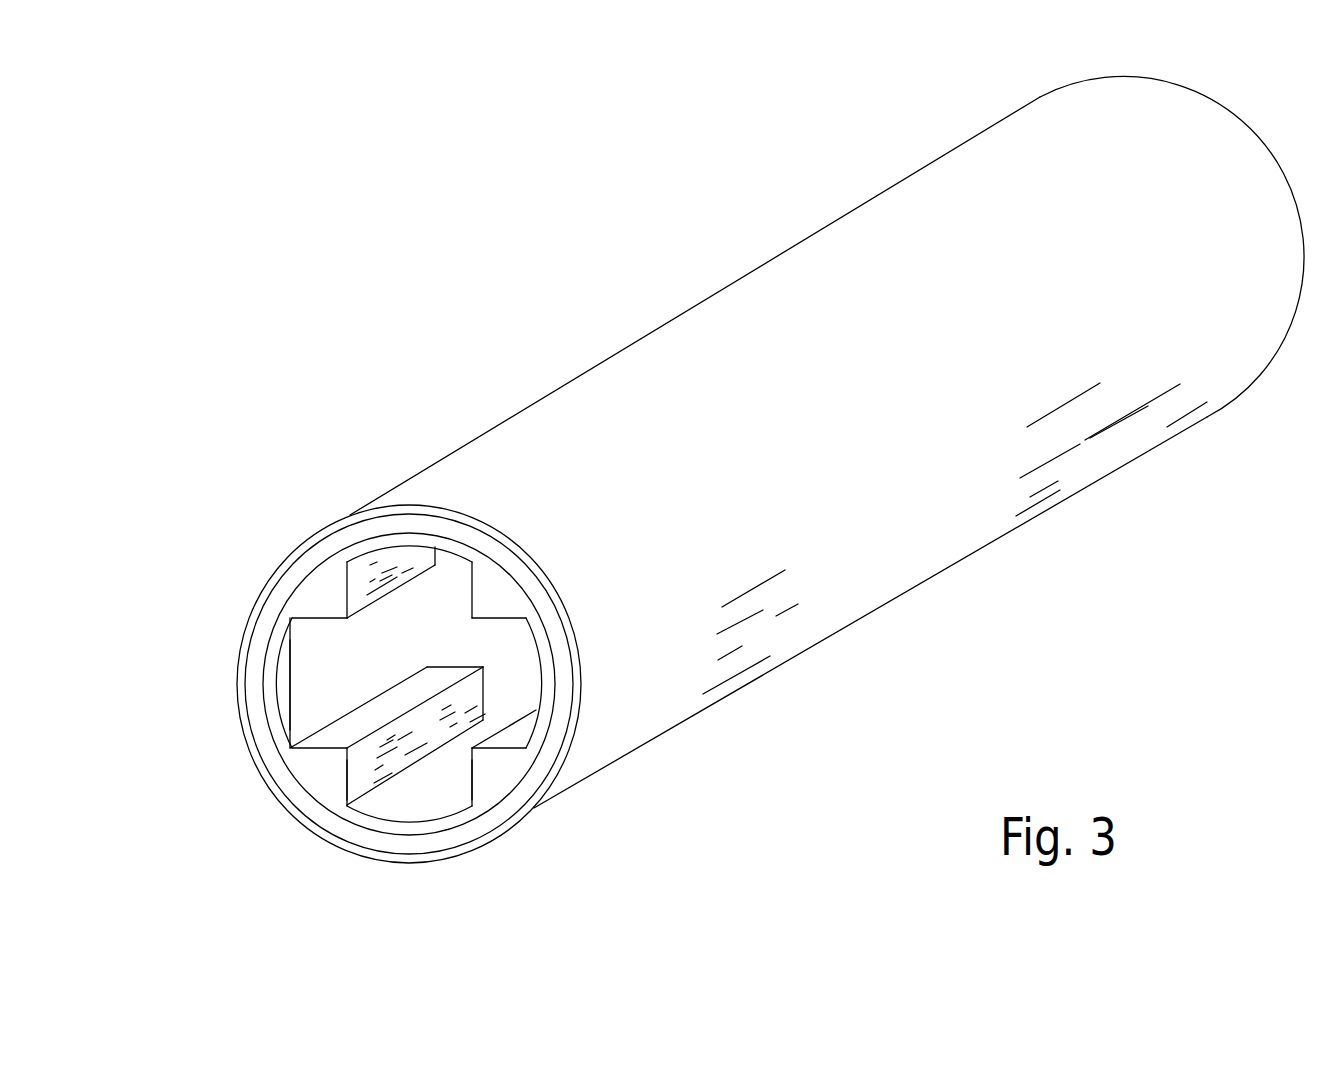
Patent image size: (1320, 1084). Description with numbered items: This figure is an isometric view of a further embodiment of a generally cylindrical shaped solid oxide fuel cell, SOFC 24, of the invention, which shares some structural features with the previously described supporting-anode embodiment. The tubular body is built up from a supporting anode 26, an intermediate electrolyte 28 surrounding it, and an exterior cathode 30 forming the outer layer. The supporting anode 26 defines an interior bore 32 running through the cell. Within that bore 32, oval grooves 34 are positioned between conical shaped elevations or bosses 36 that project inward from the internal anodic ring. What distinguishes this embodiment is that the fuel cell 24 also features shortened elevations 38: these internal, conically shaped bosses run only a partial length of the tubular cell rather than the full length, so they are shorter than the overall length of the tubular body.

The SOFC 24 is at (546, 278).
The supporting anode 26 is at (543, 740).
The intermediate electrolyte 28 is at (403, 527).
The exterior cathode 30 is at (937, 220).
The interior bore 32 is at (353, 665).
The oval grooves 34 is at (277, 702).
The conical shaped elevations/bosses 36 is at (322, 767).
The shortened elevations 38 is at (460, 662).